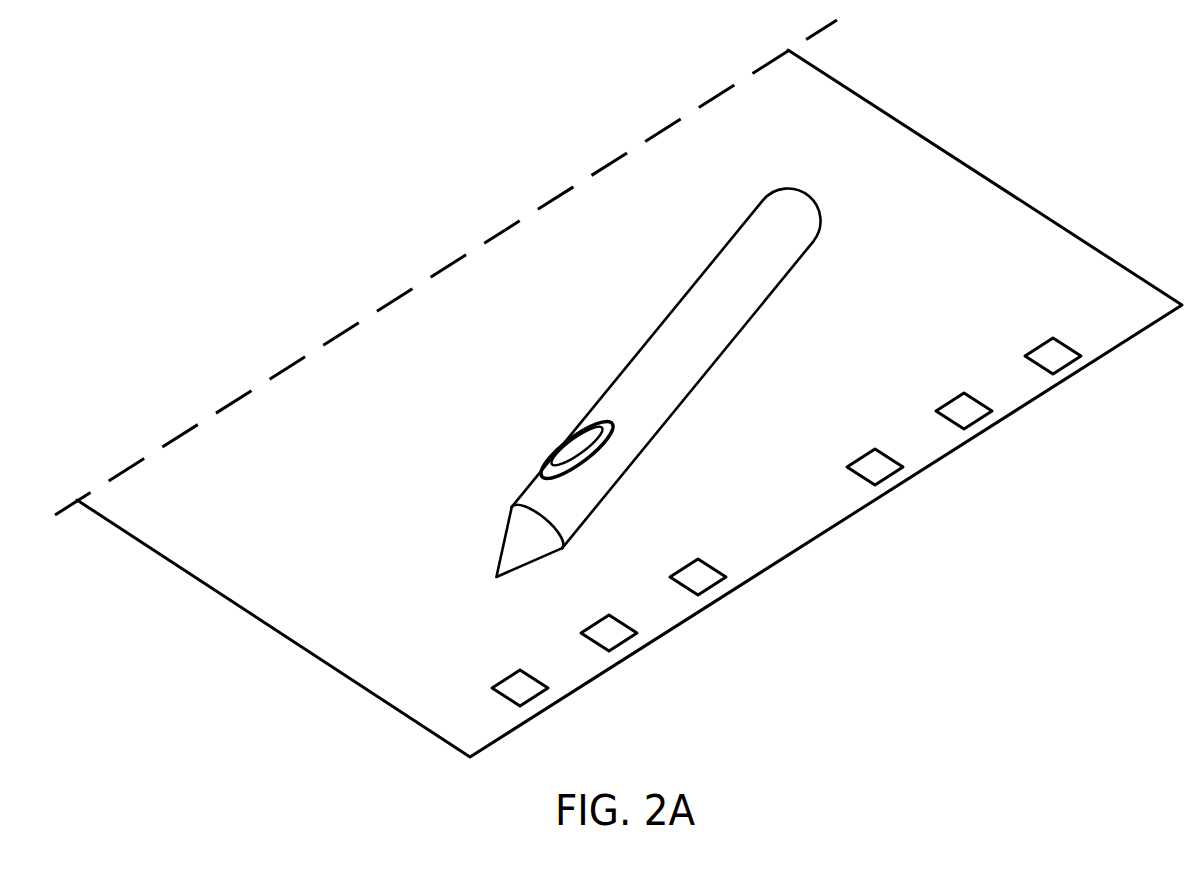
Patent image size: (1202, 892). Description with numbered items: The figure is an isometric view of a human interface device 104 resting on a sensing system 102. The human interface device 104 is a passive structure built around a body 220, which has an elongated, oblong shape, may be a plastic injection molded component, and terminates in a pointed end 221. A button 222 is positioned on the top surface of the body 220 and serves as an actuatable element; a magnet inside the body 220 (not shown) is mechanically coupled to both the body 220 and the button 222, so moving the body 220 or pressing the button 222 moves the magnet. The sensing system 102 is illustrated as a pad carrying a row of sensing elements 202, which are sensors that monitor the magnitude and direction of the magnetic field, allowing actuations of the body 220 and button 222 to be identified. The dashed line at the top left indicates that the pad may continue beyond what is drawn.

The sensing system 102 is at (1080, 259).
The human interface device 104 is at (555, 350).
The sensing element 202 is at (695, 583).
The body 220 is at (743, 327).
The pointed end 221 is at (500, 558).
The button 222 is at (471, 421).